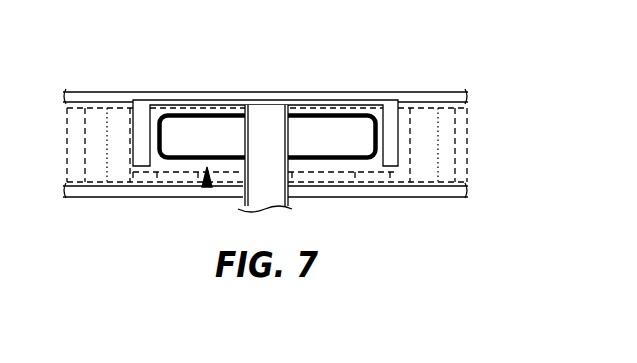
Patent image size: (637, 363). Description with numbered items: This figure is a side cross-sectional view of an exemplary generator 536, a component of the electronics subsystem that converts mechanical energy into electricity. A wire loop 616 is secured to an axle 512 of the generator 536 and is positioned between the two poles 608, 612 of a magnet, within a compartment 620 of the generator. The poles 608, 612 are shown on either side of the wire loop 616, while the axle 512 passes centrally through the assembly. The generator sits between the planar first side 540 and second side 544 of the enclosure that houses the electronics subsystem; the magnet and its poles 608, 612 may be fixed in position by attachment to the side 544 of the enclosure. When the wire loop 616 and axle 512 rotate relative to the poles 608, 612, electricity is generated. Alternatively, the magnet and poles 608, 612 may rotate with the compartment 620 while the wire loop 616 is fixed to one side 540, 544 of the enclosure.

The axle 512 is at (288, 143).
The generator 536 is at (227, 108).
The first side 540 is at (132, 198).
The second side 544 is at (322, 92).
The pole 608 is at (132, 142).
The pole 612 is at (400, 138).
The wire loop 616 is at (312, 113).
The compartment 620 is at (207, 187).